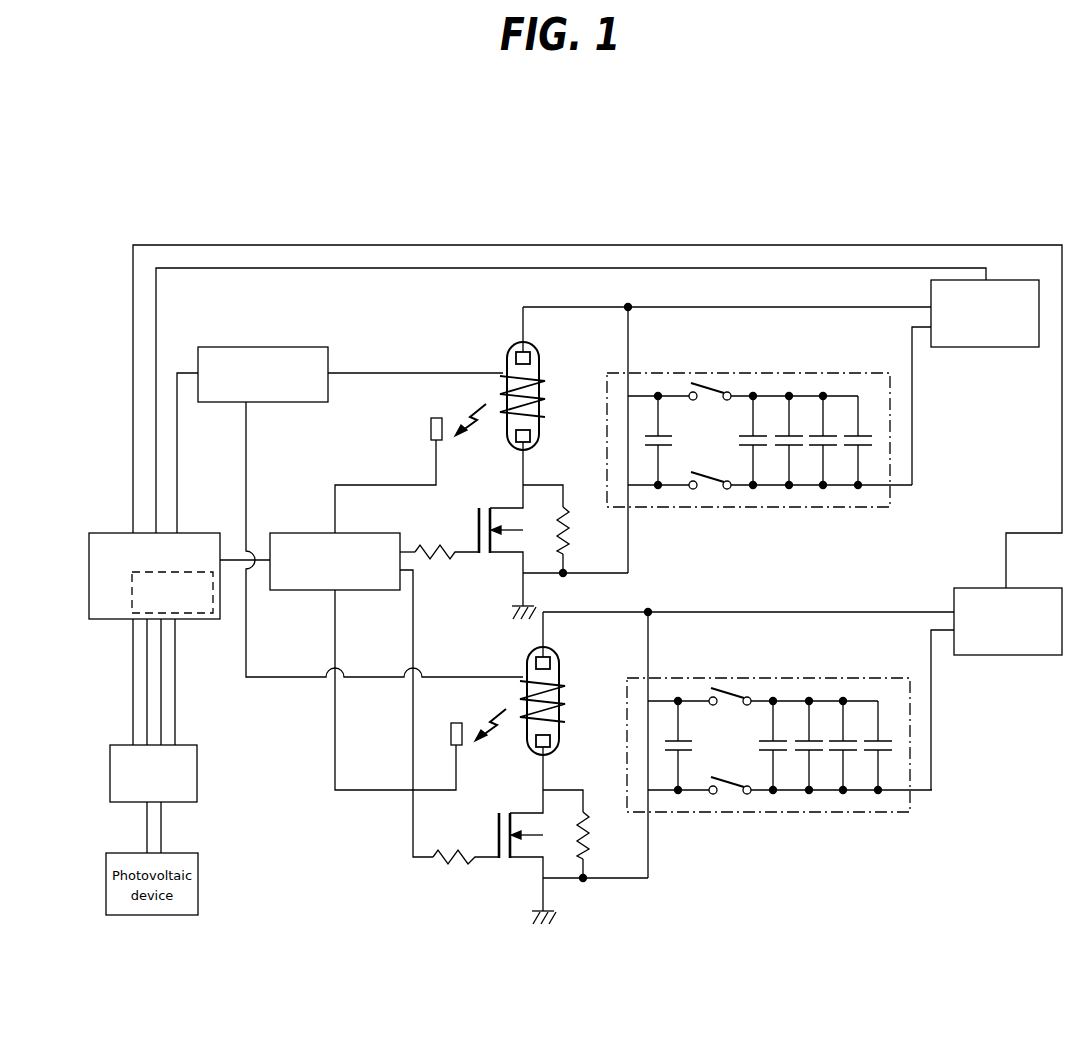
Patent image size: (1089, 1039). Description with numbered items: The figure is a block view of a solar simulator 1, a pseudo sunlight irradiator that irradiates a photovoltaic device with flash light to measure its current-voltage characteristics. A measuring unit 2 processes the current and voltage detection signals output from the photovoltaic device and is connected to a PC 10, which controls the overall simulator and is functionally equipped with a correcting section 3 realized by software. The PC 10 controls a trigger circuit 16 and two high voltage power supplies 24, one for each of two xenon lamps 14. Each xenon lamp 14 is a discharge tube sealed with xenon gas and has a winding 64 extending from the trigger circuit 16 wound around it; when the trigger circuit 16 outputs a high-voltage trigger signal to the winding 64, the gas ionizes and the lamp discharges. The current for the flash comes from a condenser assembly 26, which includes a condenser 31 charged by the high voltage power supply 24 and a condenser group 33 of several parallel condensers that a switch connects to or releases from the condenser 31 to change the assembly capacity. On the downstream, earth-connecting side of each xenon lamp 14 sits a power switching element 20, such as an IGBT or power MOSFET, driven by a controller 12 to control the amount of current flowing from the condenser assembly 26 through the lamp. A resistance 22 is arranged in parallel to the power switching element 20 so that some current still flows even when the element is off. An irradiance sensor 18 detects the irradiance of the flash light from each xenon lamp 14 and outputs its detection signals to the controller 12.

The solar simulator 1 is at (236, 226).
The measuring unit 2 is at (197, 775).
The correcting section 3 is at (208, 613).
The PC 10 is at (113, 533).
The controller 12 is at (358, 590).
The xenon lamp 14 is at (550, 362).
The trigger circuit 16 is at (297, 402).
The irradiance sensor 18 is at (431, 426).
The power switching element 20 is at (467, 529).
The resistance 22 is at (598, 535).
The high voltage power supply 24 is at (1013, 347).
The condenser assembly 26 is at (720, 508).
The condenser 31 is at (626, 440).
The condenser group 33 is at (810, 494).
The winding 64 is at (460, 373).